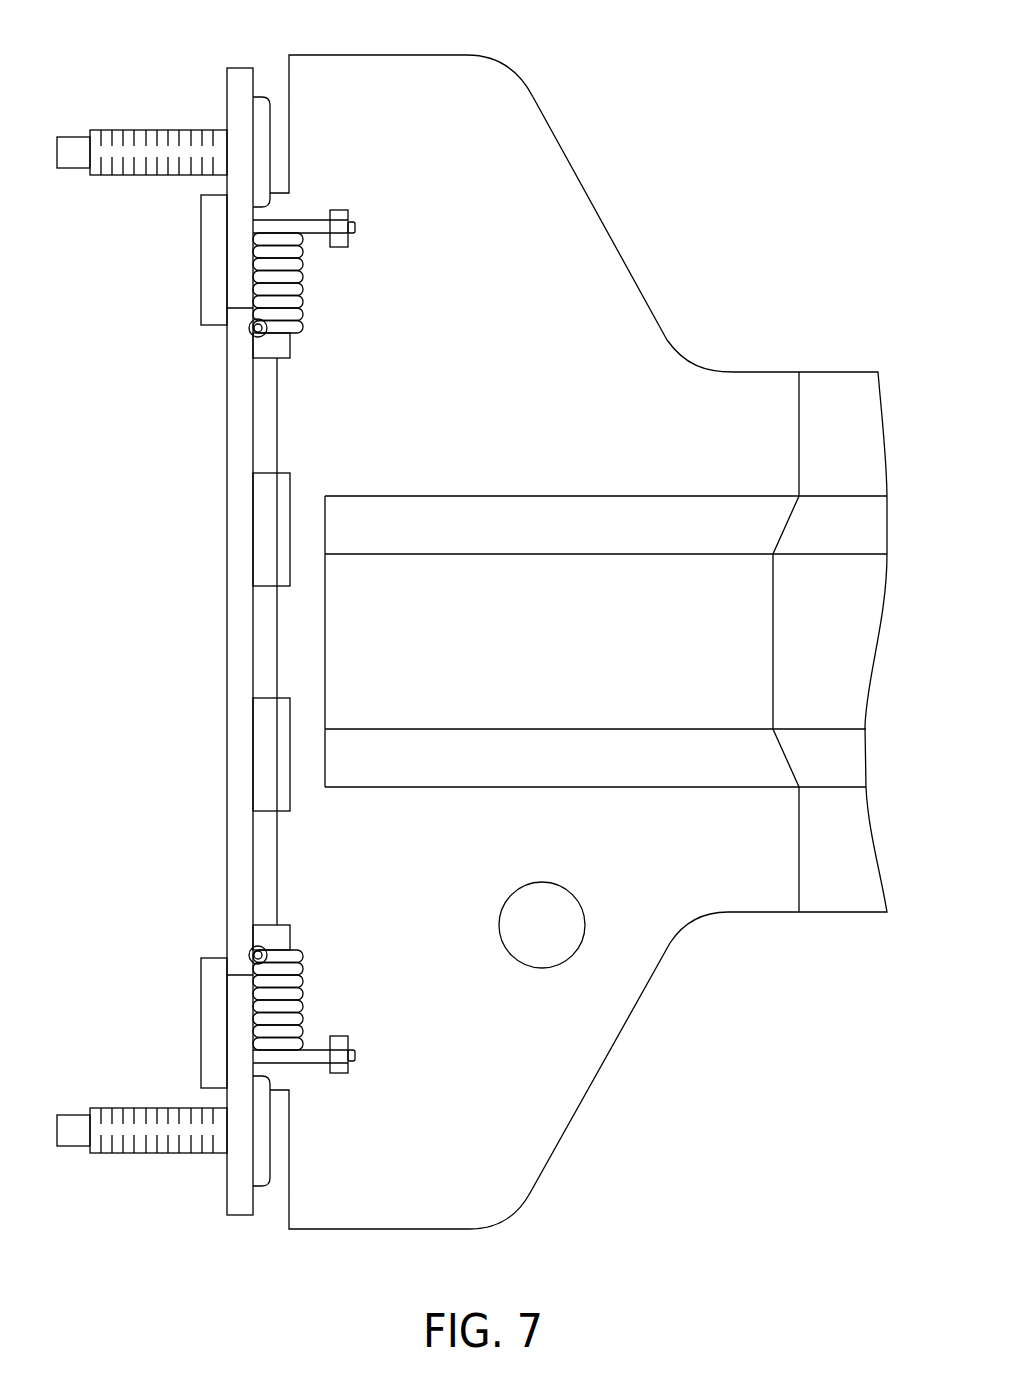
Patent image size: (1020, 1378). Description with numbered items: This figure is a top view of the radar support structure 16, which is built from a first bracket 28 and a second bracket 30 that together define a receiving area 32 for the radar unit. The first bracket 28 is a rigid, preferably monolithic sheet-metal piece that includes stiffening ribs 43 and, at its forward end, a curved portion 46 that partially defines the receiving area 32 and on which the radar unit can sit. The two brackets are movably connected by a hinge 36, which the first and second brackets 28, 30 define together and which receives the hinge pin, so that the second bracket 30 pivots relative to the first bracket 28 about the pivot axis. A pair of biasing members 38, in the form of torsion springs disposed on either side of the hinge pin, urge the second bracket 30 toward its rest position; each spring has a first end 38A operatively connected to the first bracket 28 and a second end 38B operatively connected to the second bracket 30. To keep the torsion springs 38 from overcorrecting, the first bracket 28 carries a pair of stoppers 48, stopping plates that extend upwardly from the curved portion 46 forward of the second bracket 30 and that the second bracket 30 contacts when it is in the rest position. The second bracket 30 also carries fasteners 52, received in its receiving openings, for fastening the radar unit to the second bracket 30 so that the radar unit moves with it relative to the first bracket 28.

The radar support structure 16 is at (753, 132).
The first bracket 28 is at (748, 372).
The second bracket 30 is at (227, 511).
The receiving area 32 is at (341, 90).
The hinge 36 is at (278, 855).
The biasing member 38 is at (303, 292).
The first end 38A is at (337, 210).
The second end 38B is at (265, 335).
The stiffening ribs 43 is at (538, 528).
The curved portion 46 is at (307, 85).
The stopper 48 is at (201, 248).
The fasteners 52 is at (120, 130).